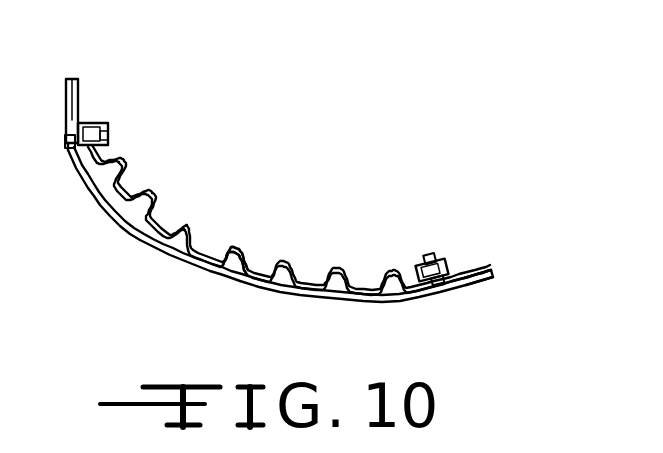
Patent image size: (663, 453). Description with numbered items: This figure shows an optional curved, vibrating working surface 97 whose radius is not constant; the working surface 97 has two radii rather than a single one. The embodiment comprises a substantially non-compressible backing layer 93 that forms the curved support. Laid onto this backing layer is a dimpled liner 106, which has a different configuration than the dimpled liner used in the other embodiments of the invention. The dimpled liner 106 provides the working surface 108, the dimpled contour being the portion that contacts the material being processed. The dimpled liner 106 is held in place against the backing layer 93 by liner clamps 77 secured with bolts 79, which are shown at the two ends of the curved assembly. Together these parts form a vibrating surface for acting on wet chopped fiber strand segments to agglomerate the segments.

The substantially non-compressible backing layer 93 is at (228, 256).
The working surface 108 is at (140, 195).
The dimpled liner 106 is at (232, 247).
The liner clamp 77 is at (91, 125).
The bolt 79 is at (110, 128).
The working surface 97 is at (473, 262).